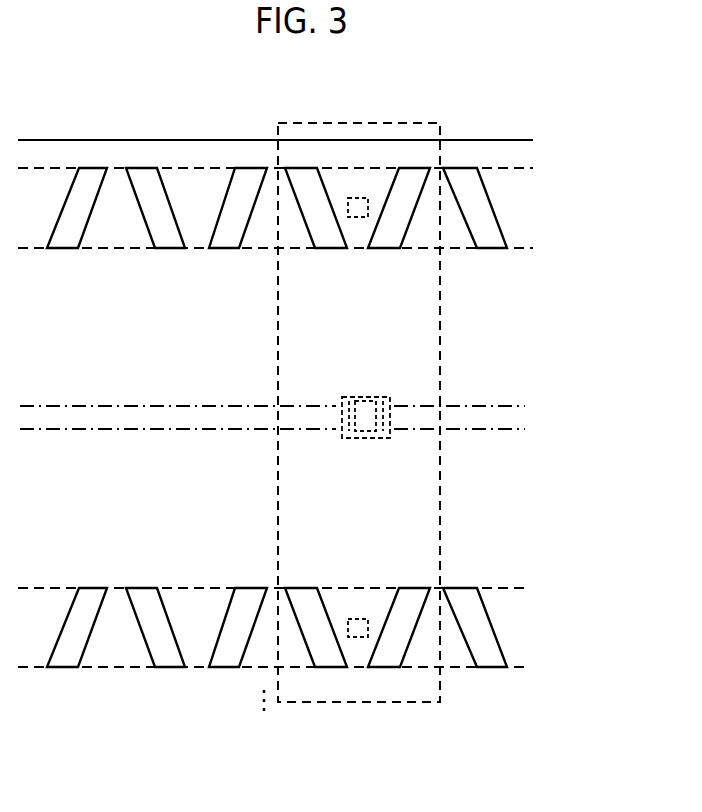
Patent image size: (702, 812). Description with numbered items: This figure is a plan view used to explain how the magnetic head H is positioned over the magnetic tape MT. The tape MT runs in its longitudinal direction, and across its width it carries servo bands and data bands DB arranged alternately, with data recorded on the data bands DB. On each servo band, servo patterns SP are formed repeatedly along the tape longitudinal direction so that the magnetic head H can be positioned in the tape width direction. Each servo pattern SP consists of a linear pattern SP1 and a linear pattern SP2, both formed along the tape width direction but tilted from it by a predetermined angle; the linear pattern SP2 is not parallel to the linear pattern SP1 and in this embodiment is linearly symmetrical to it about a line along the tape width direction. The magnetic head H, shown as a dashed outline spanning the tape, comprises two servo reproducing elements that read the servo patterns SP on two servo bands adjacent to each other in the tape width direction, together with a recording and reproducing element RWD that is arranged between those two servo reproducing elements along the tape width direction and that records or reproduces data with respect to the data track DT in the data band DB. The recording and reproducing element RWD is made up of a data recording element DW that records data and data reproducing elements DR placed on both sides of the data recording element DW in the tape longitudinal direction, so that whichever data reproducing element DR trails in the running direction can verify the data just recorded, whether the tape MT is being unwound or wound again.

The magnetic tape MT is at (486, 139).
The servo pattern SP is at (116, 257).
The linear pattern SP1 is at (88, 242).
The linear pattern SP2 is at (154, 234).
The magnetic head H is at (356, 123).
The data band DB is at (517, 337).
The data track DT is at (517, 417).
The recording and reproducing element RWD is at (392, 389).
The data recording element DW is at (369, 440).
The data reproducing element DR is at (348, 443).